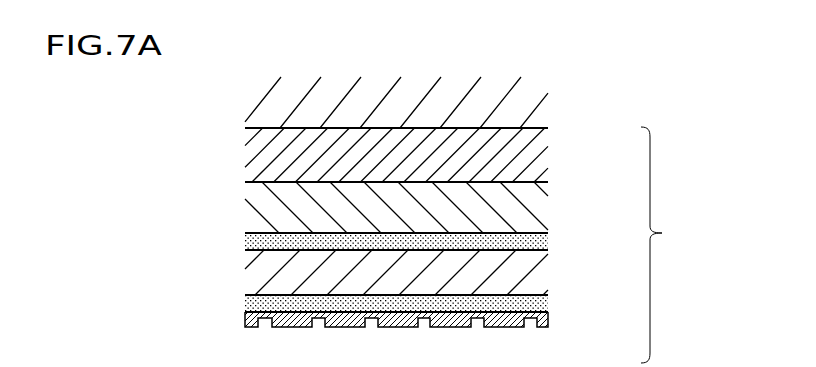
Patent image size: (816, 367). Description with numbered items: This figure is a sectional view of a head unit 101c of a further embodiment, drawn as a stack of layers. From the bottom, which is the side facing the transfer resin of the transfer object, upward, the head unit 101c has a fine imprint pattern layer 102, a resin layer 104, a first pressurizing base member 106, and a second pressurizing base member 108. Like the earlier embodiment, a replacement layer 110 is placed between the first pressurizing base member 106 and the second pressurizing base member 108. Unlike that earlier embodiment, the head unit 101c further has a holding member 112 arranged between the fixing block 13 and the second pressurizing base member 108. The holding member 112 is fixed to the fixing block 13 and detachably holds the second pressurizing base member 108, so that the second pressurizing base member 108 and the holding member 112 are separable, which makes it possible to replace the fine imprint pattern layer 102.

The fixing block 13 is at (528, 102).
The holding member 112 is at (523, 158).
The second pressurizing base member 108 is at (518, 213).
The replacement layer 110 is at (545, 245).
The first pressurizing base member 106 is at (535, 273).
The resin layer 104 is at (548, 306).
The fine imprint pattern layer 102 is at (512, 326).
The head unit 101c is at (676, 245).